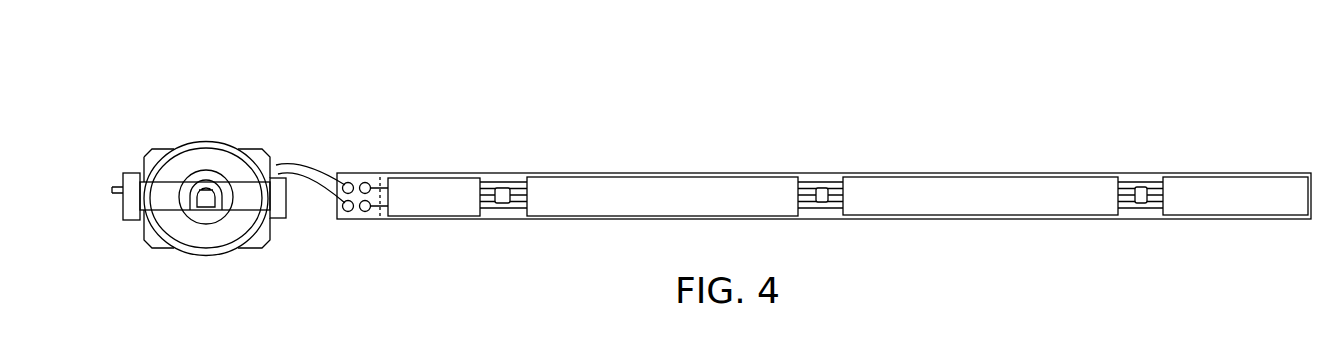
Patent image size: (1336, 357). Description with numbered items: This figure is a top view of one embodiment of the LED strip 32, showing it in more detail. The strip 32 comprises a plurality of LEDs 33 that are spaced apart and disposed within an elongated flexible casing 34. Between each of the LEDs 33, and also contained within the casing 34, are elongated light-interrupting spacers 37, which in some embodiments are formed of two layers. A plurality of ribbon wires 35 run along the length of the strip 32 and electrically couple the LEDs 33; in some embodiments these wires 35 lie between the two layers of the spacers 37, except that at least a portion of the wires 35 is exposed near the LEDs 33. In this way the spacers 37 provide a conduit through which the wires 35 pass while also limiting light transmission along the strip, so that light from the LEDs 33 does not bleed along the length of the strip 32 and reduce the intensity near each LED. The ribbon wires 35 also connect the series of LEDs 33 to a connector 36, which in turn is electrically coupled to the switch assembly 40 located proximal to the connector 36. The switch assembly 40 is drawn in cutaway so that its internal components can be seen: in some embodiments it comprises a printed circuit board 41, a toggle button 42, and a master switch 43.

The LED strip 32 is at (842, 100).
The LEDs 33 is at (502, 204).
The elongated flexible casing 34 is at (693, 173).
The ribbon wires 35 is at (1141, 177).
The connector 36 is at (362, 173).
The light-interrupting spacers 37 is at (965, 185).
The switch assembly 40 is at (186, 155).
The printed circuit board 41 is at (223, 163).
The toggle button 42 is at (205, 203).
The master switch 43 is at (123, 173).